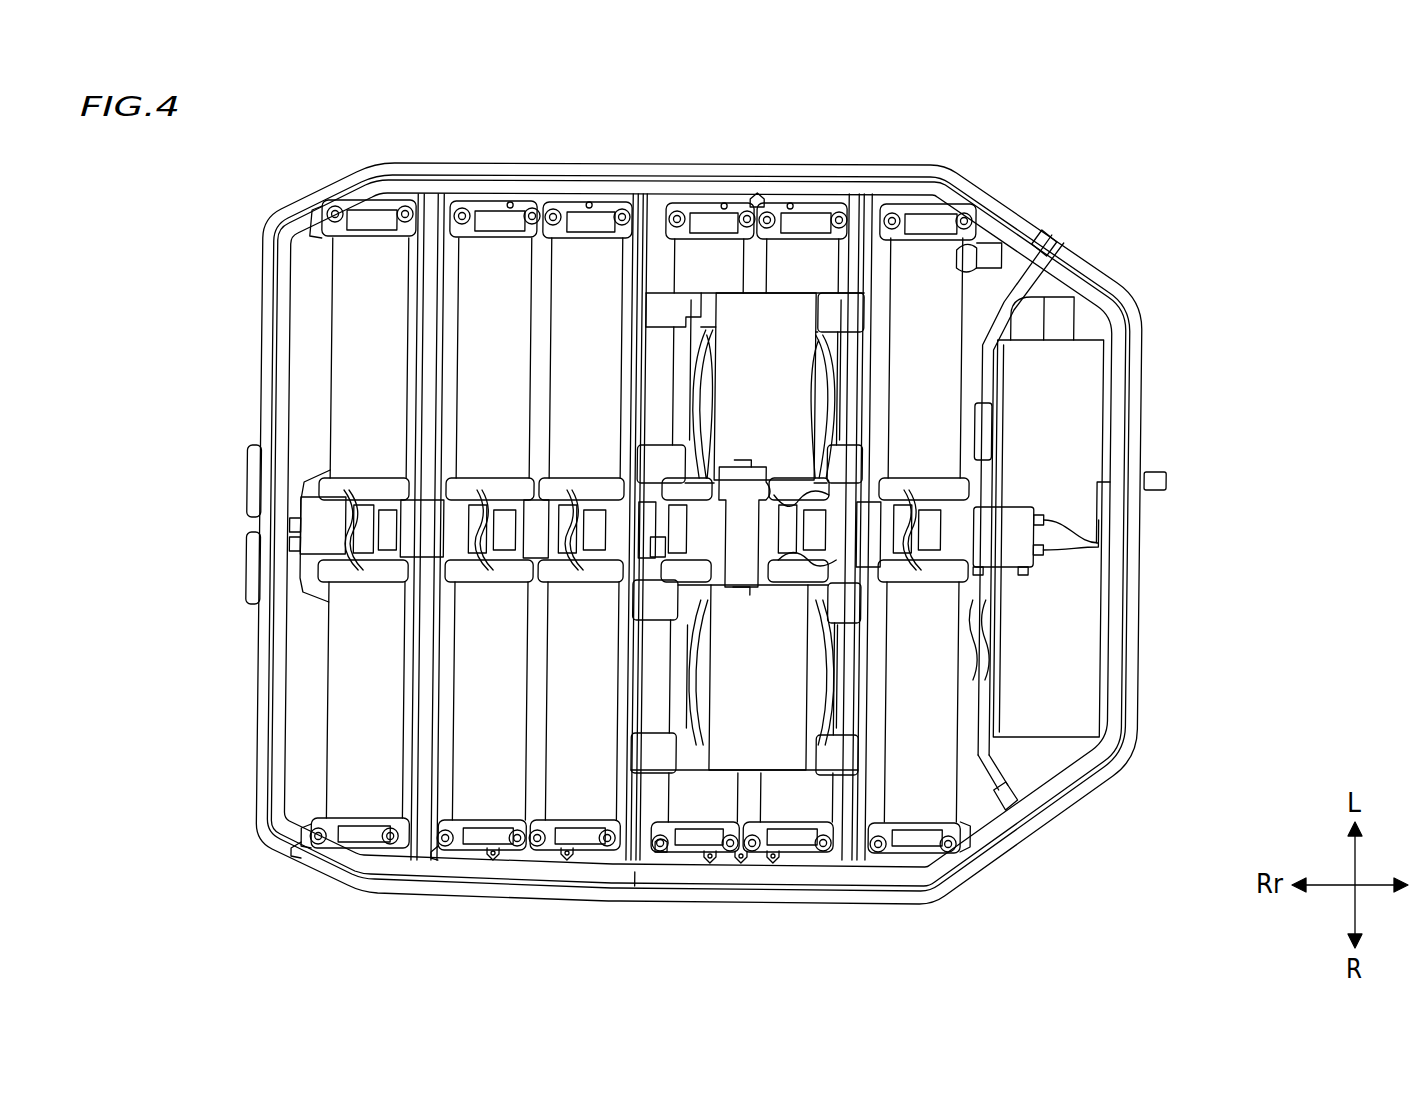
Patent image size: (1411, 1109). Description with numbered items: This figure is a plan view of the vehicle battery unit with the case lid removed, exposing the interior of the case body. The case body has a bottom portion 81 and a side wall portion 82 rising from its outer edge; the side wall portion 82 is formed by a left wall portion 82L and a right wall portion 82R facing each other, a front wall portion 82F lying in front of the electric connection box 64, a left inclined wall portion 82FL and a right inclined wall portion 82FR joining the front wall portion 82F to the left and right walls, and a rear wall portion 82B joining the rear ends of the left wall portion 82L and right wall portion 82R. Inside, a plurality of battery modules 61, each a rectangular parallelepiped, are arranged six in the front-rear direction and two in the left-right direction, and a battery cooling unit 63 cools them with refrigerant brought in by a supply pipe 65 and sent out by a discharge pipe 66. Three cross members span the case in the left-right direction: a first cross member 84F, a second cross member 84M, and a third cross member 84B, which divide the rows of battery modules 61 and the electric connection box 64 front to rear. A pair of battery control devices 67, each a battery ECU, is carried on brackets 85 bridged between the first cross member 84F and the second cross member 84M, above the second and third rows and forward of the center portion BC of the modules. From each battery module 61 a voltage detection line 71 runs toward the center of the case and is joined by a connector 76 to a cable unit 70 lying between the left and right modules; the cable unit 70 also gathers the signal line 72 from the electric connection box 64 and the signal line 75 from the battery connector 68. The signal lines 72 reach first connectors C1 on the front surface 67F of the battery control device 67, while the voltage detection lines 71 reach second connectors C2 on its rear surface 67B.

The battery module 61 is at (372, 250).
The battery cooling unit 63 is at (365, 822).
The electric connection box 64 is at (1070, 632).
The supply pipe 65 is at (1002, 305).
The discharge pipe 66 is at (990, 773).
The battery control device 67 is at (758, 550).
The rear surface 67B is at (700, 792).
The front surface 67F is at (843, 792).
The battery connector 68 is at (1158, 472).
The cable unit 70 is at (378, 470).
The voltage detection line 71 is at (375, 493).
The signal line 72 is at (1045, 300).
The signal line 75 is at (1108, 545).
The connector 76 is at (470, 505).
The bottom portion 81 is at (980, 790).
The side wall portion 82 is at (1120, 284).
The rear wall portion 82B is at (260, 381).
The left wall portion 82L is at (550, 162).
The right wall portion 82R is at (530, 900).
The front wall portion 82F is at (1142, 371).
The left inclined wall portion 82FL is at (1045, 222).
The right inclined wall portion 82FR is at (1075, 818).
The third cross member 84B is at (432, 292).
The second cross member 84M is at (645, 290).
The first cross member 84F is at (872, 290).
The bracket 85 is at (852, 300).
The center portion BC is at (642, 884).
The first connector C1 is at (824, 352).
The second connector C2 is at (714, 390).